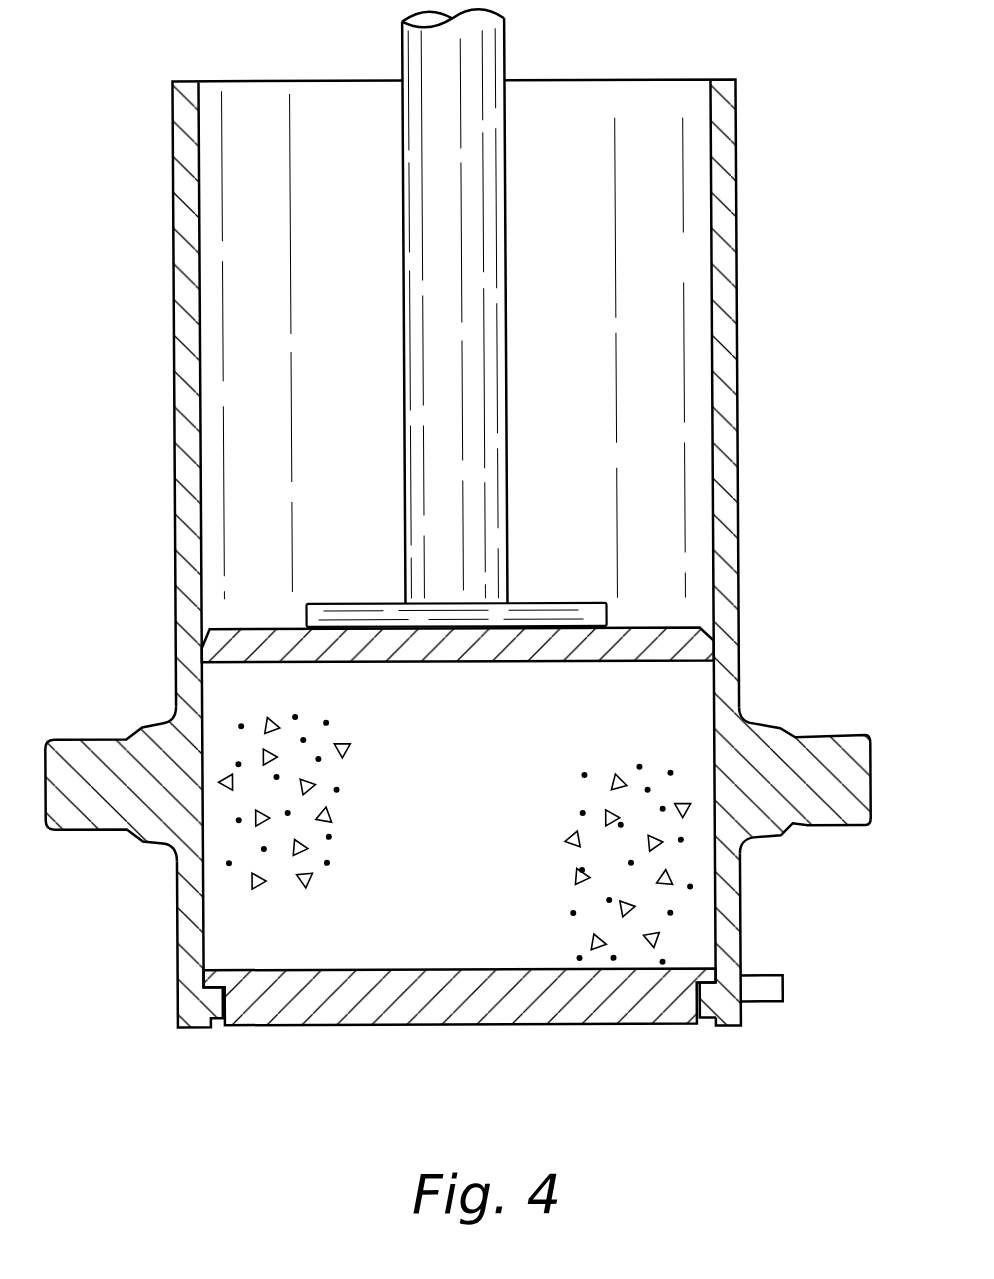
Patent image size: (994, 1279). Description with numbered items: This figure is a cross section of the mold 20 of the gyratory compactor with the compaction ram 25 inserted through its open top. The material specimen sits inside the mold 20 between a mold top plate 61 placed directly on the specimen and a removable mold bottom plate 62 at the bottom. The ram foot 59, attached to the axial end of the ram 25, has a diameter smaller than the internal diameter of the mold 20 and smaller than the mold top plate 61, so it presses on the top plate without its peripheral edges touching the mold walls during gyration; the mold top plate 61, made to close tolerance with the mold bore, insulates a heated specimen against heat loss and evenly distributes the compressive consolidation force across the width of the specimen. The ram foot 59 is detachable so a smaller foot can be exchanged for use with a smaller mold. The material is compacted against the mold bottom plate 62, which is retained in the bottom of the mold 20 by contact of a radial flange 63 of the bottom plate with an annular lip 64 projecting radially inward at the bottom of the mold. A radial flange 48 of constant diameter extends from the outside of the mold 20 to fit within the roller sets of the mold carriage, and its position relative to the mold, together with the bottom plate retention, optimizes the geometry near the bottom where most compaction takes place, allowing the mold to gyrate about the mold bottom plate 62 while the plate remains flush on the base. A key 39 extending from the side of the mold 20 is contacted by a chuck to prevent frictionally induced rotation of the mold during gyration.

The mold 20 is at (736, 541).
The ram 25 is at (466, 357).
The ram foot 59 is at (547, 605).
The mold top plate 61 is at (409, 649).
The radial flange 48 is at (831, 738).
The key 39 is at (755, 990).
The mold bottom plate 62 is at (306, 998).
The radial flange 63 is at (208, 971).
The annular lip 64 is at (701, 1024).